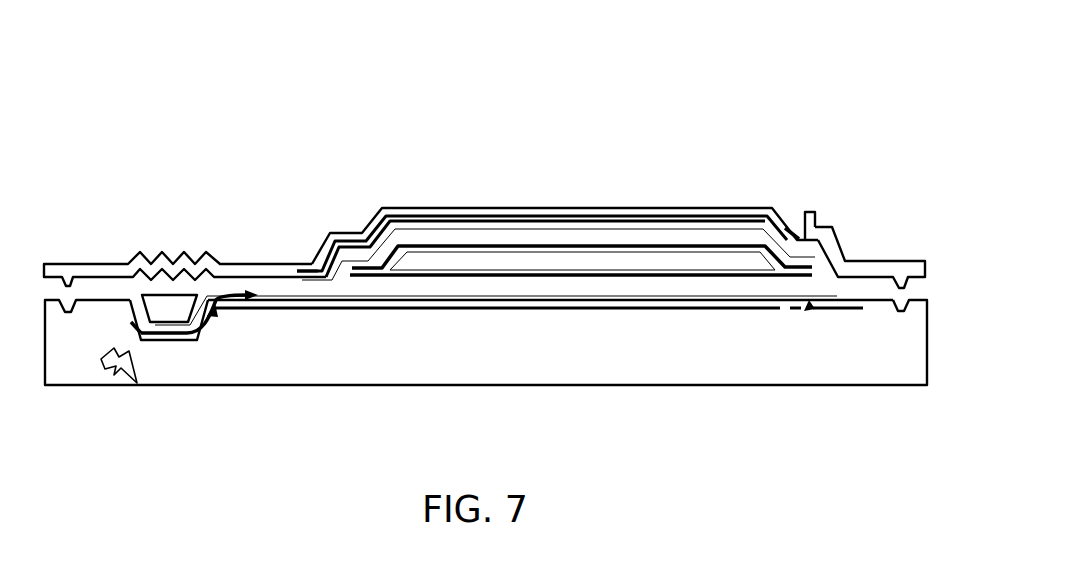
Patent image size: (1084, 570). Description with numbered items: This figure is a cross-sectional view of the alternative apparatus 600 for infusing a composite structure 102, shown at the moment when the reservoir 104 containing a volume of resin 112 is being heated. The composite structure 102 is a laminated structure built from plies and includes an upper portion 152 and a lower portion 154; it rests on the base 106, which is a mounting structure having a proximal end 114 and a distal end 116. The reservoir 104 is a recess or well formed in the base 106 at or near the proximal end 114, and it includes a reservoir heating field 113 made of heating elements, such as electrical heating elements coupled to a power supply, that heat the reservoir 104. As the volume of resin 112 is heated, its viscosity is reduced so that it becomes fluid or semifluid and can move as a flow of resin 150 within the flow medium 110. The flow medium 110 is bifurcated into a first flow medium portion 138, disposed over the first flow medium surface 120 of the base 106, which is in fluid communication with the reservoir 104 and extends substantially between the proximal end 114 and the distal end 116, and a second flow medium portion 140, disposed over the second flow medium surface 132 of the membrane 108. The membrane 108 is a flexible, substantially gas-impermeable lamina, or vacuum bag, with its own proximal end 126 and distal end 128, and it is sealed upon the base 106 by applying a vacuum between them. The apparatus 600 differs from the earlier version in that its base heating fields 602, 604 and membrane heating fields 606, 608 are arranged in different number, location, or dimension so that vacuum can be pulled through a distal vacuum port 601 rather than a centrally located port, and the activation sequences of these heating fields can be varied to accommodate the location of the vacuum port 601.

The apparatus 600 is at (692, 50).
The proximal end 126 is at (61, 252).
The volume of resin 112 is at (155, 302).
The flow of resin 150 is at (230, 293).
The second flow medium portion 140 is at (314, 275).
The second flow medium surface 132 is at (415, 219).
The membrane heating field 606 is at (500, 213).
The membrane 108 is at (557, 207).
The upper portion 152 is at (668, 243).
The composite structure 102 is at (720, 263).
The membrane heating field 608 is at (786, 222).
The distal vacuum port 601 is at (808, 211).
The distal end 128 is at (938, 268).
The reservoir 104 is at (137, 315).
The reservoir heating field 113 is at (165, 343).
The proximal end 114 is at (210, 324).
The flow medium 110 is at (263, 304).
The first flow medium surface 120 is at (397, 304).
The first flow medium portion 138 is at (437, 297).
The base heating field 602 is at (578, 302).
The lower portion 154 is at (665, 278).
The base heating field 604 is at (766, 311).
The distal end 116 is at (811, 312).
The base 106 is at (928, 342).